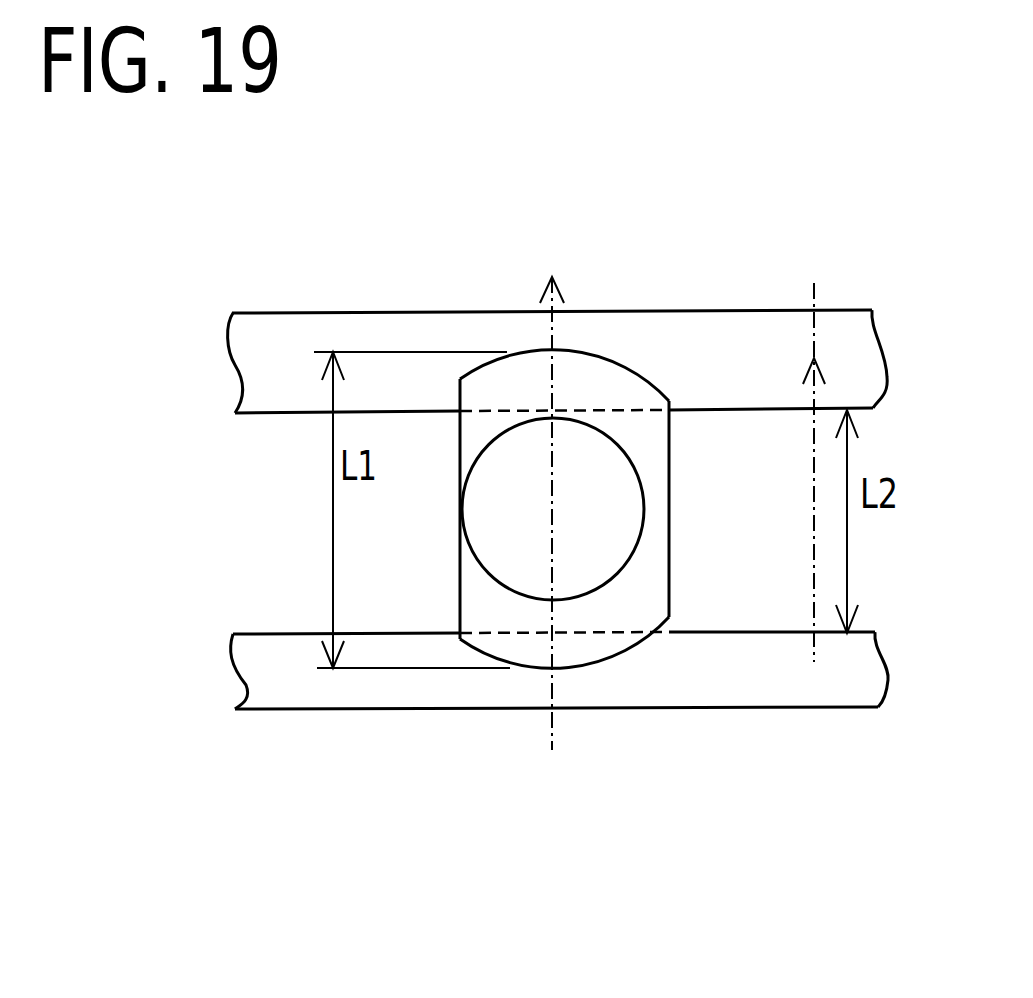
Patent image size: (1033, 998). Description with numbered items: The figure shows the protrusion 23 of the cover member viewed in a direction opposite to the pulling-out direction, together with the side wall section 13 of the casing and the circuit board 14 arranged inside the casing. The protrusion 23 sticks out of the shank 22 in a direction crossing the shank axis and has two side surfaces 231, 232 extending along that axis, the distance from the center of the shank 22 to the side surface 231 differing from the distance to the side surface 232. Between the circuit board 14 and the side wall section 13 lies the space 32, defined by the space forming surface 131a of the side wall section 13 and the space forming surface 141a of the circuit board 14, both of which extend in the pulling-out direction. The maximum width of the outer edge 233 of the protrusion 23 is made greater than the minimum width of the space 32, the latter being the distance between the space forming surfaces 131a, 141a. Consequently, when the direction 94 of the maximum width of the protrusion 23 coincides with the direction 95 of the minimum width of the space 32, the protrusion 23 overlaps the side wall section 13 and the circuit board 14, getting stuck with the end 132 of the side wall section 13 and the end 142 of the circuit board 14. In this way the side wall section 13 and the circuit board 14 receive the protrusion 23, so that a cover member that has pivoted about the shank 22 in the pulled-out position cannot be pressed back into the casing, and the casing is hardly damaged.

The space 32 is at (282, 489).
The side wall section 13 is at (332, 313).
The end of the side wall section 132 is at (422, 336).
The space forming surface 131a is at (738, 412).
The circuit board 14 is at (733, 707).
The space forming surface 141a is at (306, 634).
The end of the circuit board 142 is at (660, 690).
The protrusion 23 is at (574, 383).
The side surface 231 is at (460, 545).
The side surface 232 is at (670, 483).
The outer edge 233 is at (603, 663).
The shank 22 is at (597, 538).
The direction of the maximum width 94 is at (548, 345).
The direction of the minimum width 95 is at (819, 396).